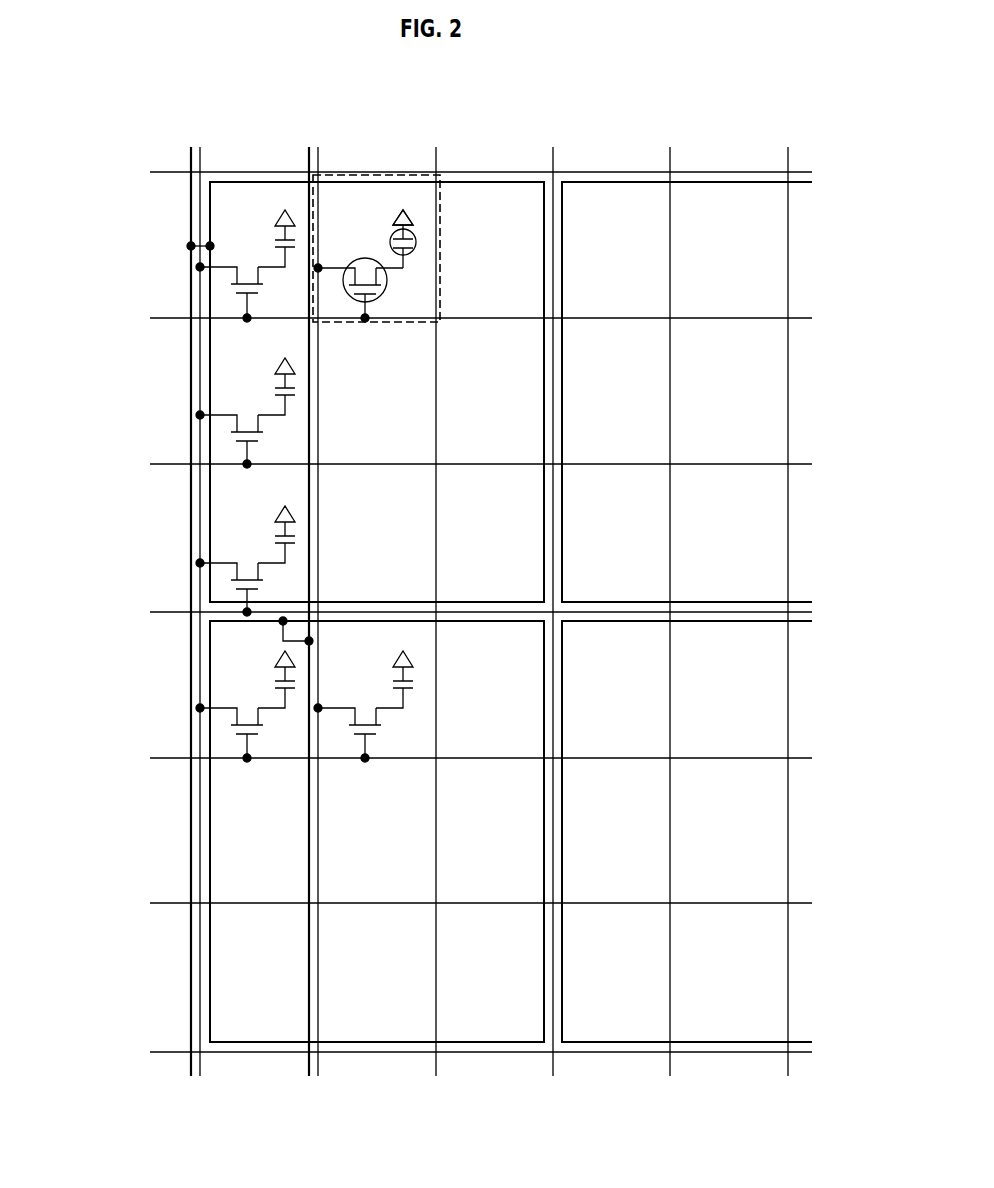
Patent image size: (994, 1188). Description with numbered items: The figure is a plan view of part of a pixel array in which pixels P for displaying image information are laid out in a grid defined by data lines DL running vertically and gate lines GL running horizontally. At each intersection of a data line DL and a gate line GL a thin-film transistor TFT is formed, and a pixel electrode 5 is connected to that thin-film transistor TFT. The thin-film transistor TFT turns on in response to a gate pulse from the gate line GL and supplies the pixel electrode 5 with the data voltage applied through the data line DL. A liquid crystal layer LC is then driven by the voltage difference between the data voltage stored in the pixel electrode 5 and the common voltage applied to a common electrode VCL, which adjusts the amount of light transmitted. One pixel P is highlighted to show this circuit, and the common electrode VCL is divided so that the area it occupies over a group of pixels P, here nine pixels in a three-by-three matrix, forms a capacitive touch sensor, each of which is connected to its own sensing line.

The data line DL is at (201, 147).
The gate line GL is at (160, 319).
The pixel P is at (404, 175).
The thin-film transistor TFT is at (385, 292).
The liquid crystal layer LC is at (416, 241).
The pixel electrode 5 is at (413, 250).
The common electrode VCL is at (392, 232).